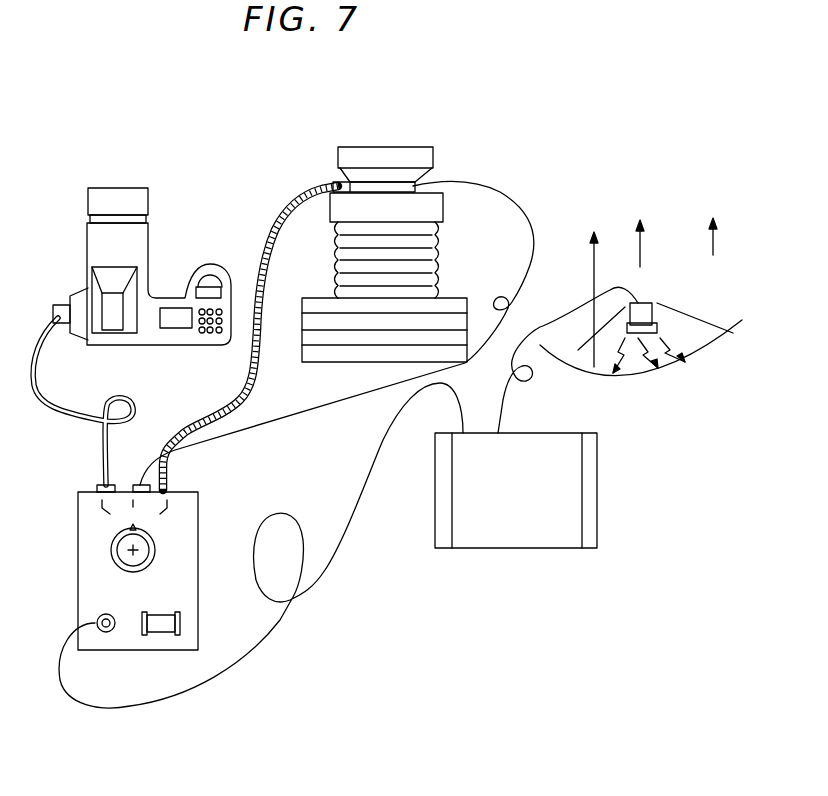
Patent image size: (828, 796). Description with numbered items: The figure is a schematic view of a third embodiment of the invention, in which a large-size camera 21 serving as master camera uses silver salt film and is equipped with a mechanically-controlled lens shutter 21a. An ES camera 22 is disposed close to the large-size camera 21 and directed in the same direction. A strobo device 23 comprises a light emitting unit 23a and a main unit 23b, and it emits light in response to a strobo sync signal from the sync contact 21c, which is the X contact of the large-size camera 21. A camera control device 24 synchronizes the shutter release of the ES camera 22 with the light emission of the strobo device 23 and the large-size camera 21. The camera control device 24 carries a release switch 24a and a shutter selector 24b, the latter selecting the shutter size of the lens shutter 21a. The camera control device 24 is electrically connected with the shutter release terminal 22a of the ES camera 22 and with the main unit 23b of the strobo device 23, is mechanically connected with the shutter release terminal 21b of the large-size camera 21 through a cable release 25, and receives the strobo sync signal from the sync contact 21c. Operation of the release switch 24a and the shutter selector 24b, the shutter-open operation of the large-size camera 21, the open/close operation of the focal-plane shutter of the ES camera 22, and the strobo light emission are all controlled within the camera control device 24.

The large-size camera 21 is at (460, 296).
The lens shutter 21a is at (447, 196).
The shutter release terminal 21b is at (340, 182).
The sync contact 21c is at (405, 184).
The ES camera 22 is at (148, 248).
The shutter release terminal 22a is at (60, 306).
The strobo device 23 is at (638, 408).
The light emitting unit 23a is at (650, 302).
The main unit 23b is at (538, 549).
The camera control device 24 is at (78, 573).
The release switch 24a is at (198, 627).
The shutter selector 24b is at (152, 542).
The cable release 25 is at (281, 223).